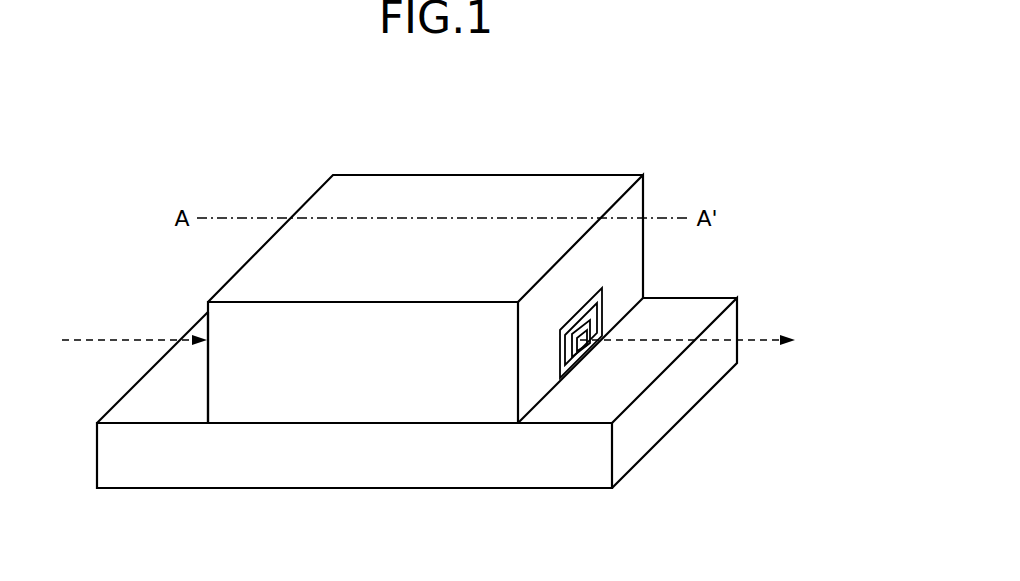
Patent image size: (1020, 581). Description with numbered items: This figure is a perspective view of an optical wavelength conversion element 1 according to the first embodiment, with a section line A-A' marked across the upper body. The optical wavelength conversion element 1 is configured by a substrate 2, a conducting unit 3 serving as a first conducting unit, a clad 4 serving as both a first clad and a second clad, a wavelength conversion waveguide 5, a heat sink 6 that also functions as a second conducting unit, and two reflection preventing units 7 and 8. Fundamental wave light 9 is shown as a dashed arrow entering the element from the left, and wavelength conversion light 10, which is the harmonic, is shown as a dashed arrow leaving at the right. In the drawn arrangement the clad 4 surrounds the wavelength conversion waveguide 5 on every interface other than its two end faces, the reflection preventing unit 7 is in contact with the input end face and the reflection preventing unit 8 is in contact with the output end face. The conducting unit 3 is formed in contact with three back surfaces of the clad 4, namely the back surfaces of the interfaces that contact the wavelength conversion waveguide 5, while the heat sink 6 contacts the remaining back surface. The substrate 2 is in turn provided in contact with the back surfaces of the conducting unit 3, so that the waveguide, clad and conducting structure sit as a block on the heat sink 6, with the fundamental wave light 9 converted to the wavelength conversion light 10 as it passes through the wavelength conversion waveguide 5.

The optical wavelength conversion element 1 is at (557, 175).
The substrate 2 is at (408, 197).
The conducting unit 3 is at (607, 297).
The clad 4 is at (578, 348).
The wavelength conversion waveguide 5 is at (590, 345).
The heat sink 6 is at (638, 437).
The reflection preventing unit 7 is at (205, 317).
The reflection preventing unit 8 is at (582, 335).
The fundamental wave light 9 is at (110, 340).
The wavelength conversion light 10 is at (758, 342).